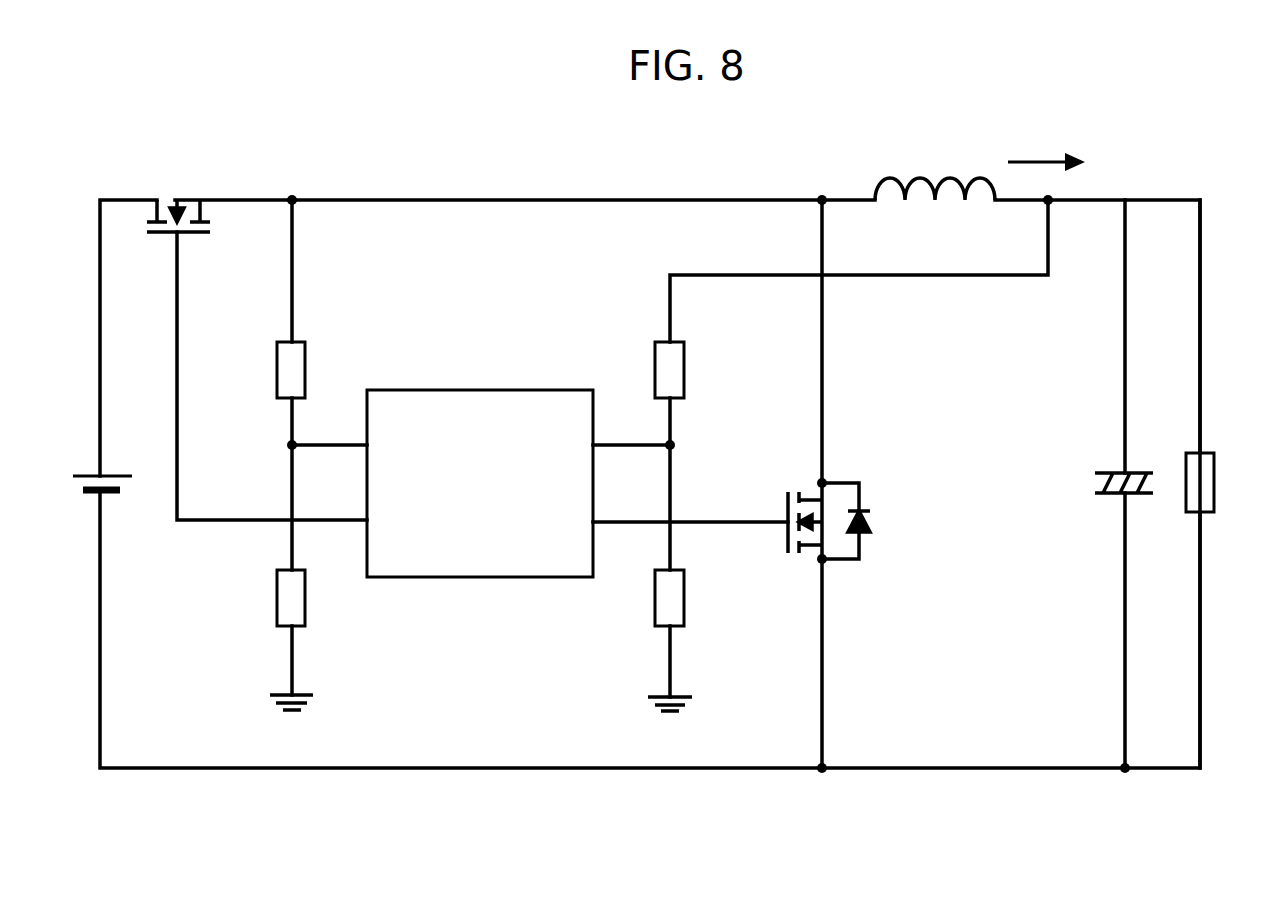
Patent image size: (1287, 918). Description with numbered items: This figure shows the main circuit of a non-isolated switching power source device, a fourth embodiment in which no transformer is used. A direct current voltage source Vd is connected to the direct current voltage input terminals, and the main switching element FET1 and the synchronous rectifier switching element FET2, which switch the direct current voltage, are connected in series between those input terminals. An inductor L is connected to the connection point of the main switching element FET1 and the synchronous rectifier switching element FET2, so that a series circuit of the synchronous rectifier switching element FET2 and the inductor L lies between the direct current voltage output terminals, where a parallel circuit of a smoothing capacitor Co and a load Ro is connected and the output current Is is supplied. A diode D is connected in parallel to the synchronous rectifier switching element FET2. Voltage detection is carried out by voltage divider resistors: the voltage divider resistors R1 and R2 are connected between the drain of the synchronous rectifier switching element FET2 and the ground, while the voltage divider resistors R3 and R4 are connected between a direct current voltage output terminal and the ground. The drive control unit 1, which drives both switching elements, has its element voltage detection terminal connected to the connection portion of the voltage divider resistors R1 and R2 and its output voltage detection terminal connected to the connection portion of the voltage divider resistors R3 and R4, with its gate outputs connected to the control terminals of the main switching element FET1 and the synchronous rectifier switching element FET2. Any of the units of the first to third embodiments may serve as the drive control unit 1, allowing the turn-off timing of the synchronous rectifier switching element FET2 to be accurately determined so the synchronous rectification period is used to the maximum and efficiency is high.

The drive control unit 1 is at (557, 577).
The main switching element FET1 is at (171, 200).
The synchronous rectifier switching element FET2 is at (773, 505).
The voltage divider resistor R1 is at (310, 357).
The voltage divider resistor R2 is at (306, 627).
The voltage divider resistor R3 is at (689, 357).
The voltage divider resistor R4 is at (685, 627).
The direct current voltage source Vd is at (113, 469).
The diode D is at (859, 521).
The inductor L is at (935, 173).
The output current Is is at (1046, 150).
The smoothing capacitor Co is at (1130, 461).
The load Ro is at (1218, 471).